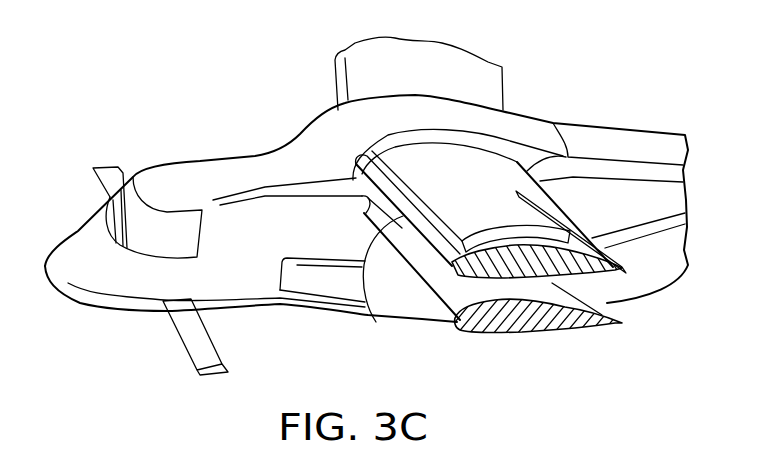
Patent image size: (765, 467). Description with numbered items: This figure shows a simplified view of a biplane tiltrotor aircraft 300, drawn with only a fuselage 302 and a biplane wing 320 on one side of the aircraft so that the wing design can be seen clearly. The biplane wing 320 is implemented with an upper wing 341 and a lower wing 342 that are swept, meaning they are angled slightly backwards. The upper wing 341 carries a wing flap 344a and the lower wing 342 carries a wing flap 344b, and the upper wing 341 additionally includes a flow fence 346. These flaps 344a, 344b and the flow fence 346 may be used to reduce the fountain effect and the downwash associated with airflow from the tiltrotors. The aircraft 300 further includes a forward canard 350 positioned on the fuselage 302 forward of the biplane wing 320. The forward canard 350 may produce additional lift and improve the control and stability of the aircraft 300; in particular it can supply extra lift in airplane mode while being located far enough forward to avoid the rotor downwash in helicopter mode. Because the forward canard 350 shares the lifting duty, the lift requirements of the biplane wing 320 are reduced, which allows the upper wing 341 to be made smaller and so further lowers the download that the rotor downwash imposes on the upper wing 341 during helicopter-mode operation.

The biplane tiltrotor aircraft 300 is at (223, 85).
The fuselage 302 is at (78, 230).
The biplane wing 320 is at (341, 242).
The upper wing 341 is at (362, 312).
The lower wing 342 is at (412, 288).
The wing flap 344a is at (574, 218).
The wing flap 344b is at (607, 302).
The flow fence 346 is at (492, 225).
The forward canard 350 is at (177, 338).